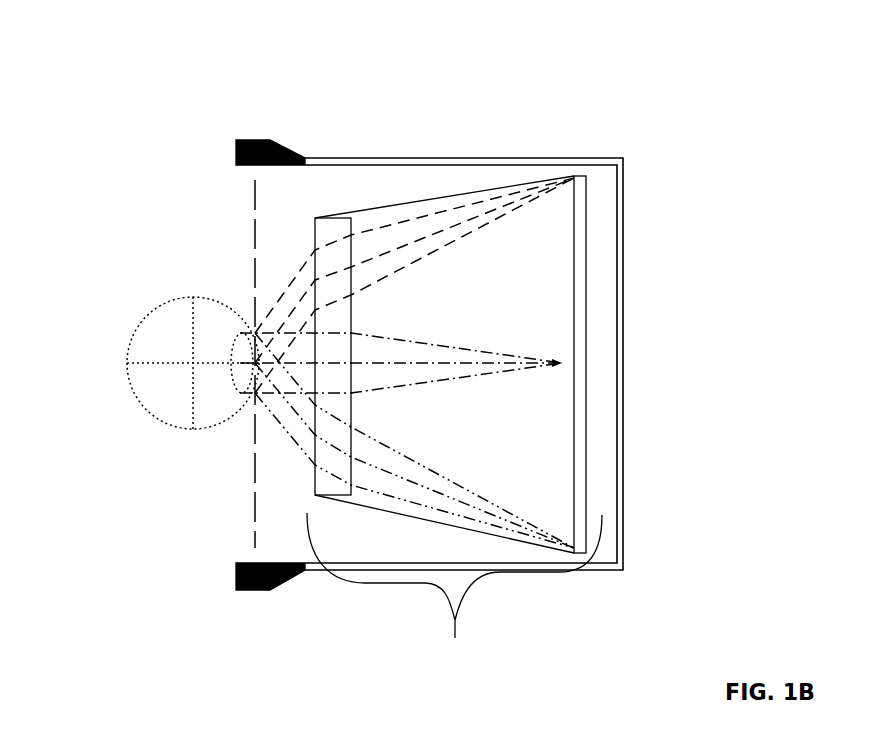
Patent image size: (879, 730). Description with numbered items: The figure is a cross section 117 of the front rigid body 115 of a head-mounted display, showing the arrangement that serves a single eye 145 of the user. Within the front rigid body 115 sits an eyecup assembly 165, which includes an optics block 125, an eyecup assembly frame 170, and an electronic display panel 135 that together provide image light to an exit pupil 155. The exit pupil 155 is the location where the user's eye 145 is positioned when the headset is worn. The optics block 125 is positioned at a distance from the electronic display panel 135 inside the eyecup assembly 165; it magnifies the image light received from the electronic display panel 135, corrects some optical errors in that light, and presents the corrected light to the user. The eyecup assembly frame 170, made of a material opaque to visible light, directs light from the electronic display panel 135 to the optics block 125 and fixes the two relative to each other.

The cross section 117 is at (32, 59).
The front rigid body 115 is at (593, 153).
The electronic display panel 135 is at (588, 285).
The optics block 125 is at (313, 230).
The eyecup assembly frame 170 is at (442, 192).
The eyecup assembly 165 is at (454, 600).
The eye 145 is at (160, 305).
The exit pupil 155 is at (245, 492).